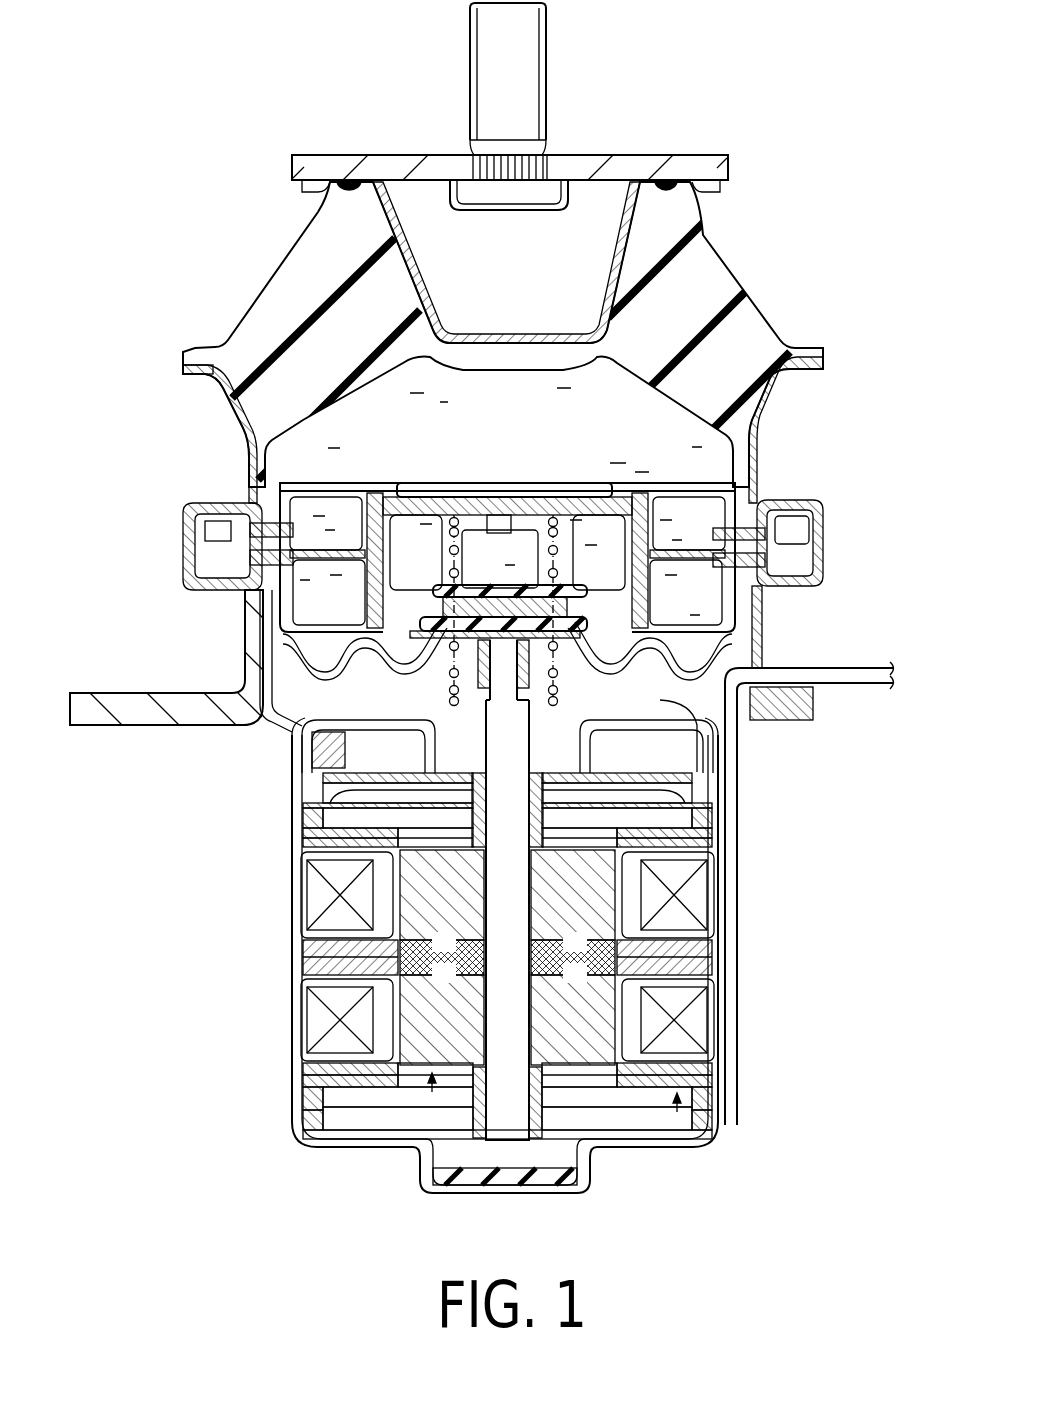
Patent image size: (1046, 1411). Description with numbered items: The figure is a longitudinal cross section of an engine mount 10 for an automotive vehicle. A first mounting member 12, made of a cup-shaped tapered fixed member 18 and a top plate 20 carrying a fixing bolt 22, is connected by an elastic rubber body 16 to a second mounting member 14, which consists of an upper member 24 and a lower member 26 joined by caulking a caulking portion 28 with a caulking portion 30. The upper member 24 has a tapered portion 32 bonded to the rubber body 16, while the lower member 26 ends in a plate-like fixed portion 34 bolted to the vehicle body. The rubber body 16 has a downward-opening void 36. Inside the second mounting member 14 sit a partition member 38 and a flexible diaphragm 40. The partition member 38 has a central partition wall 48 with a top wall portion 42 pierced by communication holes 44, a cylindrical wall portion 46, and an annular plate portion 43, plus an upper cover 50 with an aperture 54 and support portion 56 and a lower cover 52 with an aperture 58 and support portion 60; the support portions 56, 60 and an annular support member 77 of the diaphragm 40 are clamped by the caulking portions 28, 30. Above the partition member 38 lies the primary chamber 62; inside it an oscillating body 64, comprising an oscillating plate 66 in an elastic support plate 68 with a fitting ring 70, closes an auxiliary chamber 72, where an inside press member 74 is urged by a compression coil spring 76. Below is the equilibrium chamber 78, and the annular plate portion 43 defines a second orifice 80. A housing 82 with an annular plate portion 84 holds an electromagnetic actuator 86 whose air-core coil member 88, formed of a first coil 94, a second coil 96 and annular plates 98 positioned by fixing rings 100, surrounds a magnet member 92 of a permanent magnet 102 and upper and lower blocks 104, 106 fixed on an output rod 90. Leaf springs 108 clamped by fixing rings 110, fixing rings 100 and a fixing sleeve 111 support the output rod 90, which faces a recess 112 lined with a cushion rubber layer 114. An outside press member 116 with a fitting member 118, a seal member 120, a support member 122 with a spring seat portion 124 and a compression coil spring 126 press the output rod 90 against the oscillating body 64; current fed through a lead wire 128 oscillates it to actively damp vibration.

The engine mount 10 is at (366, 73).
The first mounting member 12 is at (655, 133).
The second mounting member 14 is at (232, 440).
The elastic rubber body 16 is at (280, 322).
The fixed member 18 is at (690, 228).
The top plate 20 is at (340, 163).
The fixing bolt 22 is at (530, 62).
The upper member 24 is at (768, 410).
The lower member 26 is at (250, 670).
The caulking portion 28 is at (180, 575).
The caulking portion 30 is at (782, 565).
The tapered portion 32 is at (238, 395).
The fixed portion 34 is at (177, 713).
The void 36 is at (397, 368).
The partition member 38 is at (705, 375).
The flexible diaphragm 40 is at (277, 720).
The top wall portion 42 is at (530, 505).
The annular plate portion 43 is at (332, 530).
The communication holes 44 is at (420, 520).
The cylindrical wall portion 46 is at (750, 485).
The central partition wall 48 is at (468, 480).
The upper cover 50 is at (355, 520).
The lower cover 52 is at (640, 628).
The aperture 54 is at (393, 505).
The support portion 56 is at (232, 512).
The aperture 58 is at (660, 650).
The support portion 60 is at (768, 525).
The primary chamber 62 is at (607, 380).
The oscillating body 64 is at (583, 575).
The oscillating plate 66 is at (525, 490).
The elastic support plate 68 is at (432, 540).
The fitting ring 70 is at (790, 590).
The auxiliary chamber 72 is at (705, 383).
The inside press member 74 is at (565, 555).
The compression coil spring 76 is at (484, 530).
The annular support member 77 is at (207, 520).
The equilibrium chamber 78 is at (293, 647).
The second orifice 80 is at (313, 597).
The housing 82 is at (768, 905).
The annular plate portion 84 is at (200, 557).
The electromagnetic actuator 86 is at (245, 1013).
The air-core coil member 88 is at (683, 1137).
The output rod 90 is at (522, 1140).
The magnet member 92 is at (425, 1158).
The first coil 94 is at (320, 900).
The second coil 96 is at (317, 1010).
The annular plates 98 is at (703, 827).
The fixing rings 100 is at (303, 817).
The permanent magnet 102 is at (567, 1047).
The upper block 104 is at (603, 893).
The lower block 106 is at (590, 1172).
The leaf spring 108 is at (303, 797).
The fixing rings 110 is at (545, 808).
The fixing sleeve 111 is at (700, 765).
The recess 112 is at (478, 1185).
The cushion rubber layer 114 is at (590, 1160).
The outside press member 116 is at (470, 678).
The fitting member 118 is at (535, 672).
The seal member 120 is at (305, 727).
The support member 122 is at (350, 777).
The spring seat portion 124 is at (562, 715).
The compression coil spring 126 is at (443, 705).
The lead wire 128 is at (843, 677).